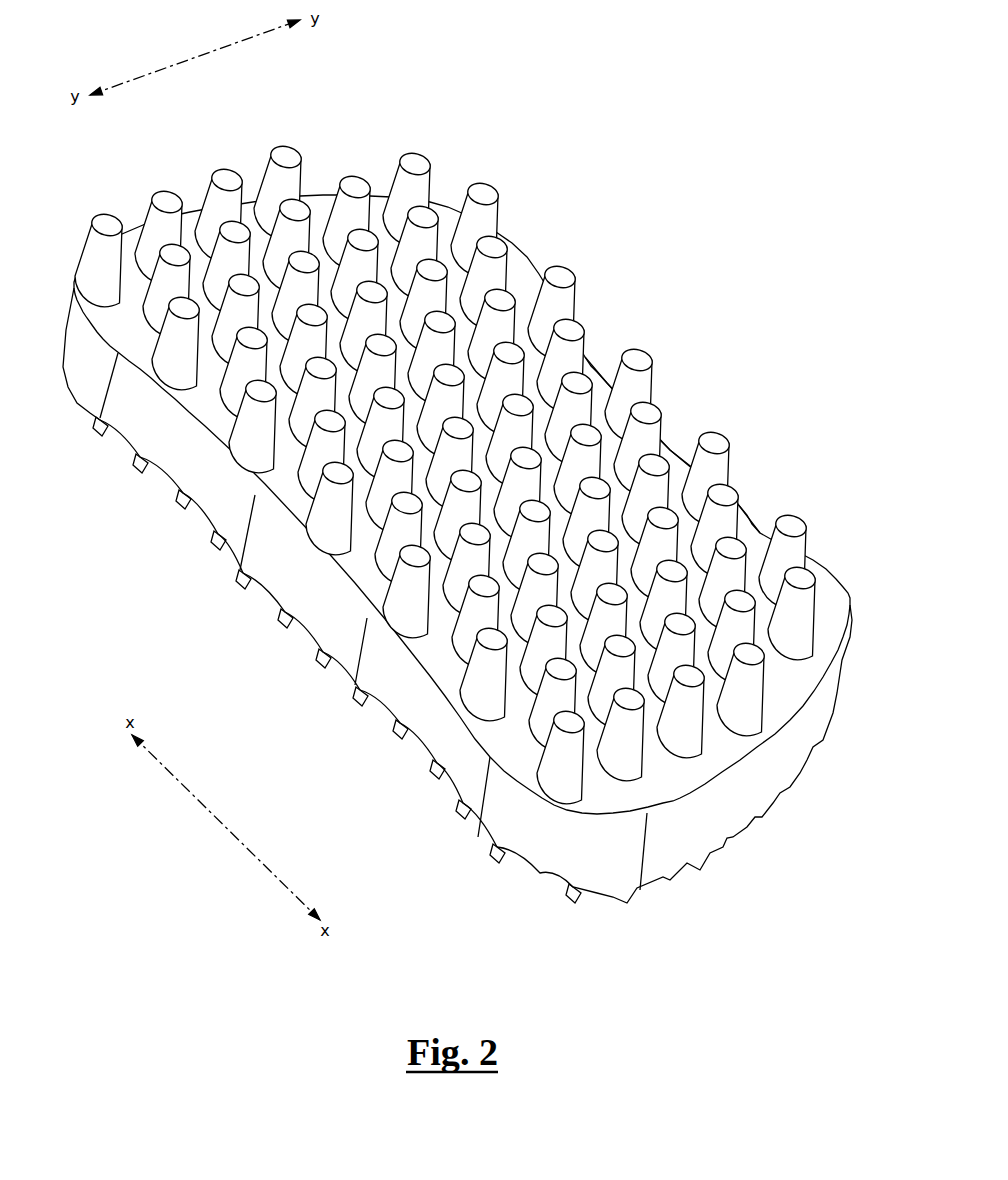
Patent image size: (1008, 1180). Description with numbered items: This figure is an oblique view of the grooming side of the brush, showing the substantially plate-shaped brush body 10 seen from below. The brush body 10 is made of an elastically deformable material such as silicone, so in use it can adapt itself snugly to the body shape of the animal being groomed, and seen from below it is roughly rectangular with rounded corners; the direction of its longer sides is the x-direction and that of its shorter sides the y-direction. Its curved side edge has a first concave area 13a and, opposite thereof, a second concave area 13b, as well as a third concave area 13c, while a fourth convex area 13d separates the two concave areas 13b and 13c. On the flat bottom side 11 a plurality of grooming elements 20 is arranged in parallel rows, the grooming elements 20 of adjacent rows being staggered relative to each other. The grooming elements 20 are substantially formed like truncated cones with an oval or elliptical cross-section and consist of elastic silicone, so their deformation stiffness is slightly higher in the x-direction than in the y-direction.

The brush body 10 is at (466, 473).
The flat bottom side 11 is at (130, 298).
The first concave area 13a is at (597, 365).
The second concave area 13b is at (430, 717).
The third concave area 13c is at (188, 455).
The fourth convex area 13d is at (297, 590).
The grooming elements 20 is at (410, 160).